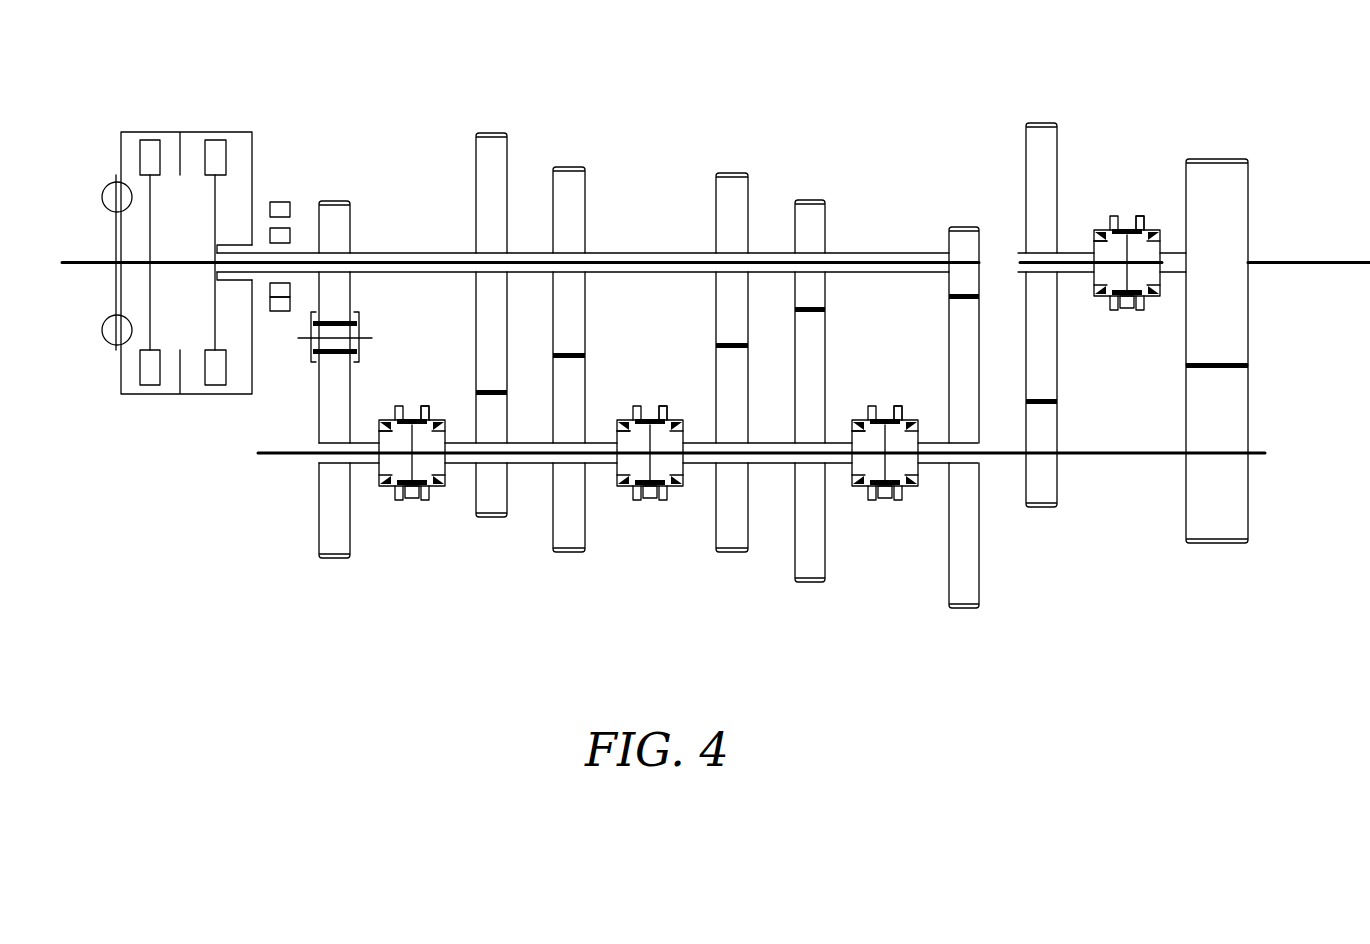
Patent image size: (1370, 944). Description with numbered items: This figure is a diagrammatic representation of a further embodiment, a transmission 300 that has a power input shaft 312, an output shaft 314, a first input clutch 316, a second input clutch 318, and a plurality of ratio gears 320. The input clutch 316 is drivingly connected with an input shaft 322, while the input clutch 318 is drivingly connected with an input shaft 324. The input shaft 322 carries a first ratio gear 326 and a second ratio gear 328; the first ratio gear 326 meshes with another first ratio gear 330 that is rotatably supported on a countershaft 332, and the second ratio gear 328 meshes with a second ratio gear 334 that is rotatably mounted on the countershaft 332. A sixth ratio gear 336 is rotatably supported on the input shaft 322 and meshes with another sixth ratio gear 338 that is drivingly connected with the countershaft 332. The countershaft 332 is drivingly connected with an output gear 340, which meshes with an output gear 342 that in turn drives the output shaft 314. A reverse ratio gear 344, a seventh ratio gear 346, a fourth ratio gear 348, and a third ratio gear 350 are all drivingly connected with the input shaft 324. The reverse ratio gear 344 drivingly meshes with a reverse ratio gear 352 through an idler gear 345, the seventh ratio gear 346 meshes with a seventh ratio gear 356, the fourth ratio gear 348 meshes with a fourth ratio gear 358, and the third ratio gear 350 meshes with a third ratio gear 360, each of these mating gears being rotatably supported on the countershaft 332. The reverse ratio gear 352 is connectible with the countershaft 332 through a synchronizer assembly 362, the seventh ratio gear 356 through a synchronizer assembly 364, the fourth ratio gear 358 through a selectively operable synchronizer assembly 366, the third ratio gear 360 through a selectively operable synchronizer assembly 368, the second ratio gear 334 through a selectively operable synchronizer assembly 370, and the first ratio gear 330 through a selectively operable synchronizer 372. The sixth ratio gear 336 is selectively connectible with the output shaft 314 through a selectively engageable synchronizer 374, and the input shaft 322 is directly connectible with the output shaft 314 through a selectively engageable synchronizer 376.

The transmission 300 is at (800, 134).
The power input shaft 312 is at (84, 255).
The output shaft 314 is at (1312, 253).
The first input clutch 316 is at (150, 127).
The second input clutch 318 is at (218, 127).
The plurality of ratio gears 320 is at (655, 580).
The input shaft 322 is at (398, 262).
The input shaft 324 is at (307, 252).
The first ratio gear 326 is at (980, 232).
The second ratio gear 328 is at (826, 212).
The first ratio gear 330 is at (980, 582).
The countershaft 332 is at (258, 453).
The second ratio gear 334 is at (826, 543).
The sixth ratio gear 336 is at (1058, 130).
The sixth ratio gear 338 is at (1058, 492).
The output gear 340 is at (1252, 420).
The output gear 342 is at (1252, 330).
The reverse ratio gear 344 is at (334, 200).
The idler gear 345 is at (359, 335).
The seventh ratio gear 346 is at (497, 133).
The fourth ratio gear 348 is at (568, 167).
The third ratio gear 350 is at (730, 173).
The reverse ratio gear 352 is at (350, 540).
The seventh ratio gear 356 is at (476, 500).
The fourth ratio gear 358 is at (585, 530).
The third ratio gear 360 is at (716, 540).
The synchronizer assembly 362 is at (390, 412).
The synchronizer assembly 364 is at (440, 412).
The synchronizer assembly 366 is at (627, 412).
The synchronizer assembly 368 is at (675, 412).
The synchronizer assembly 370 is at (862, 412).
The synchronizer 372 is at (905, 412).
The synchronizer 374 is at (1100, 218).
The synchronizer 376 is at (1151, 218).